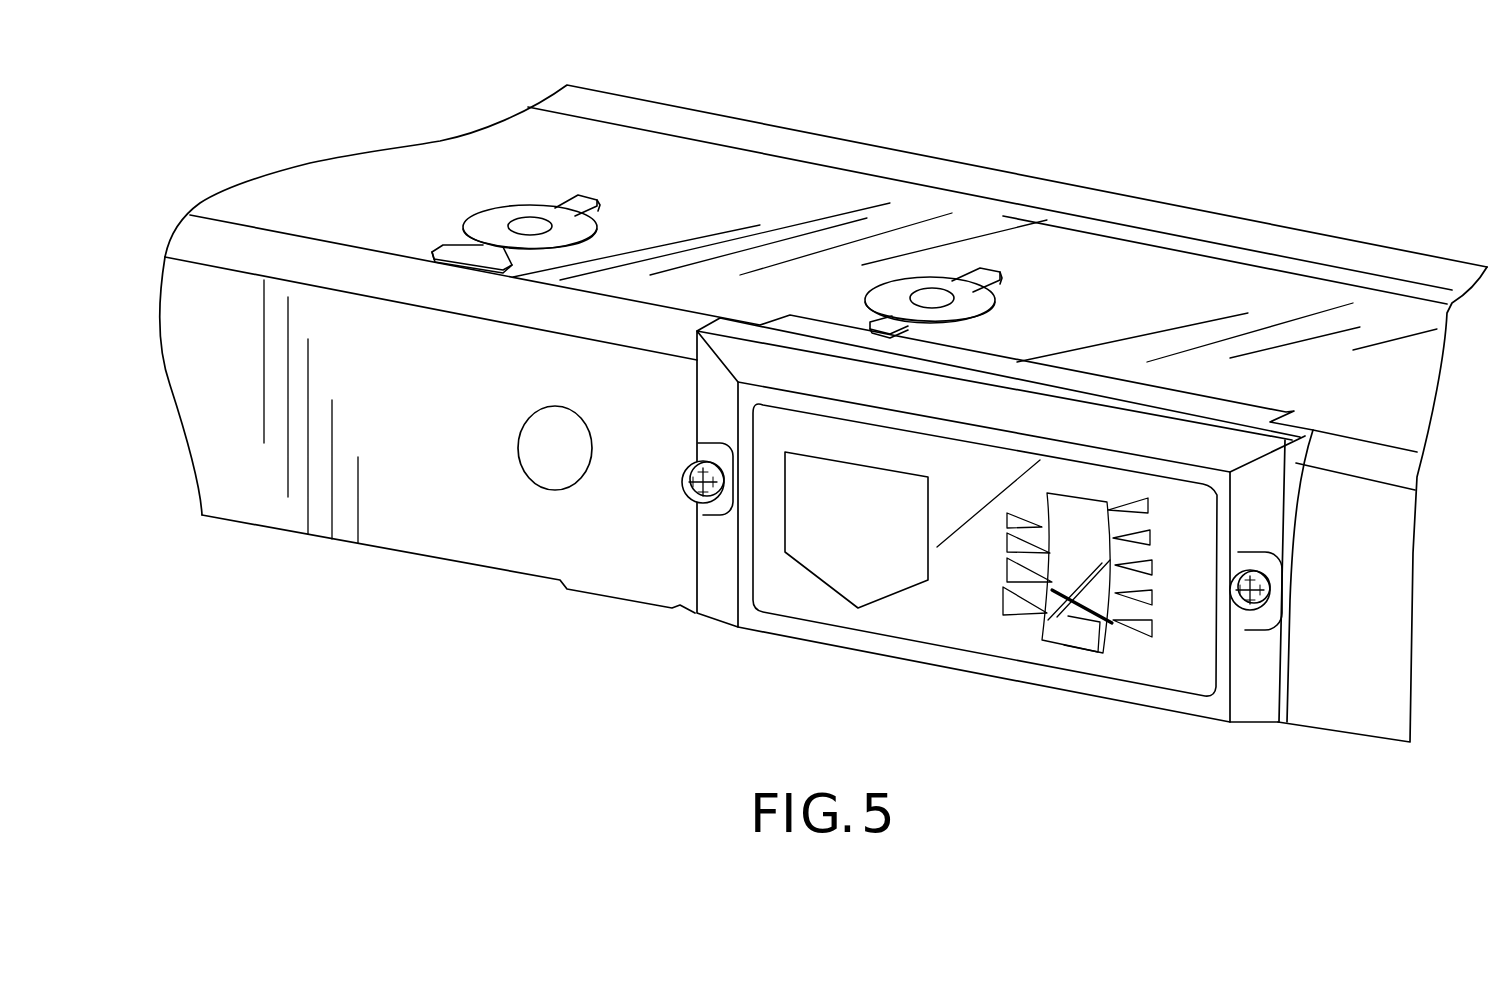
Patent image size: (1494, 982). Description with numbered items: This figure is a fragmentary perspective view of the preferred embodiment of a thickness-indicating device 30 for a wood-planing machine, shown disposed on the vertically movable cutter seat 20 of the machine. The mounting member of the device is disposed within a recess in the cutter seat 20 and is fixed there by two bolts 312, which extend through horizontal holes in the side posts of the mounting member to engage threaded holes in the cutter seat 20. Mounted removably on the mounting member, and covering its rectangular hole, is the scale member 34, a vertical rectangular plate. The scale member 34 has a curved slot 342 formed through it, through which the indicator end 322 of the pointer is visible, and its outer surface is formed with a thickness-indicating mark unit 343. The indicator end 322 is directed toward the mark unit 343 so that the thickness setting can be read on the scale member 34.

The cutter seat 20 is at (493, 577).
The thickness-indicating device 30 is at (1005, 554).
The bolts 312 is at (715, 498).
The indicator end 322 is at (1062, 622).
The scale member 34 is at (912, 623).
The curved slot 342 is at (1087, 643).
The thickness-indicating mark unit 343 is at (1134, 620).